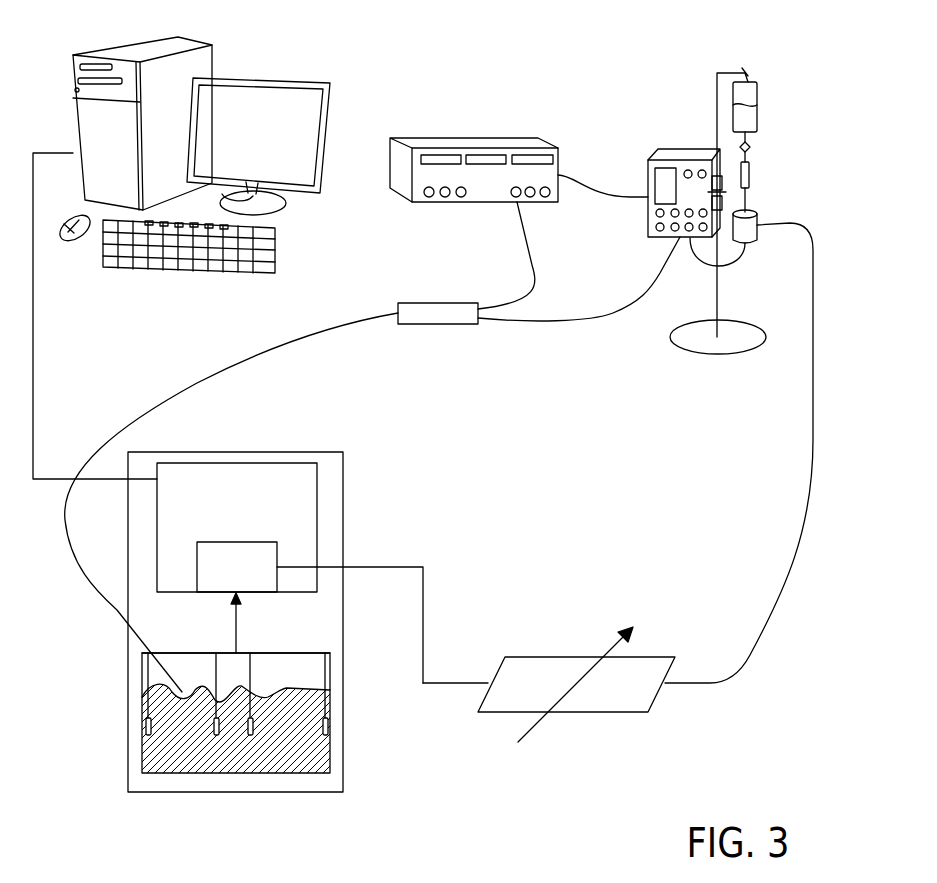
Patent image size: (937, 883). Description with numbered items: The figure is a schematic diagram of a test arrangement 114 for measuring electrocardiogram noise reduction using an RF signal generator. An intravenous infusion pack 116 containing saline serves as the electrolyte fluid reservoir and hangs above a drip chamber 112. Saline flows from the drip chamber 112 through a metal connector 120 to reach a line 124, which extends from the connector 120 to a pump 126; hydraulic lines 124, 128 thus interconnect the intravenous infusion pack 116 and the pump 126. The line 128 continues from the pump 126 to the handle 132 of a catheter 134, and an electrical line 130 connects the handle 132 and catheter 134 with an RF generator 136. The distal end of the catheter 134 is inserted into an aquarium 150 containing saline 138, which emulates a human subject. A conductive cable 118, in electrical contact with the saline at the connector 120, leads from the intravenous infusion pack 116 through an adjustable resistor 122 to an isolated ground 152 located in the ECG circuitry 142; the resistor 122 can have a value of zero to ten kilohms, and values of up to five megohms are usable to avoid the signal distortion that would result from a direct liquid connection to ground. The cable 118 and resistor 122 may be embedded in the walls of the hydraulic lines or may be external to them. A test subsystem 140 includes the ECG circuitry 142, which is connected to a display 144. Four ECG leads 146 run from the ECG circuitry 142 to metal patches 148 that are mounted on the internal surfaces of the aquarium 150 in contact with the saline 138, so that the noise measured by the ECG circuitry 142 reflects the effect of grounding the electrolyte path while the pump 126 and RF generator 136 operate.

The drip chamber 112 is at (750, 183).
The test arrangement 114 is at (388, 72).
The intravenous infusion pack 116 is at (757, 100).
The cable 118 is at (812, 432).
The metal connector 120 is at (748, 244).
The adjustable resistor 122 is at (533, 657).
The line 124 is at (692, 246).
The pump 126 is at (670, 148).
The line 128 is at (571, 323).
The electrical line 130 is at (517, 232).
The handle 132 is at (430, 303).
The catheter 134 is at (340, 326).
The RF generator 136 is at (418, 138).
The saline 138 is at (198, 768).
The test subsystem 140 is at (343, 485).
The ECG circuitry 142 is at (284, 463).
The display 144 is at (264, 78).
The ECG leads 146 is at (197, 653).
The metal patches 148 is at (158, 737).
The aquarium 150 is at (283, 775).
The isolated ground 152 is at (253, 597).